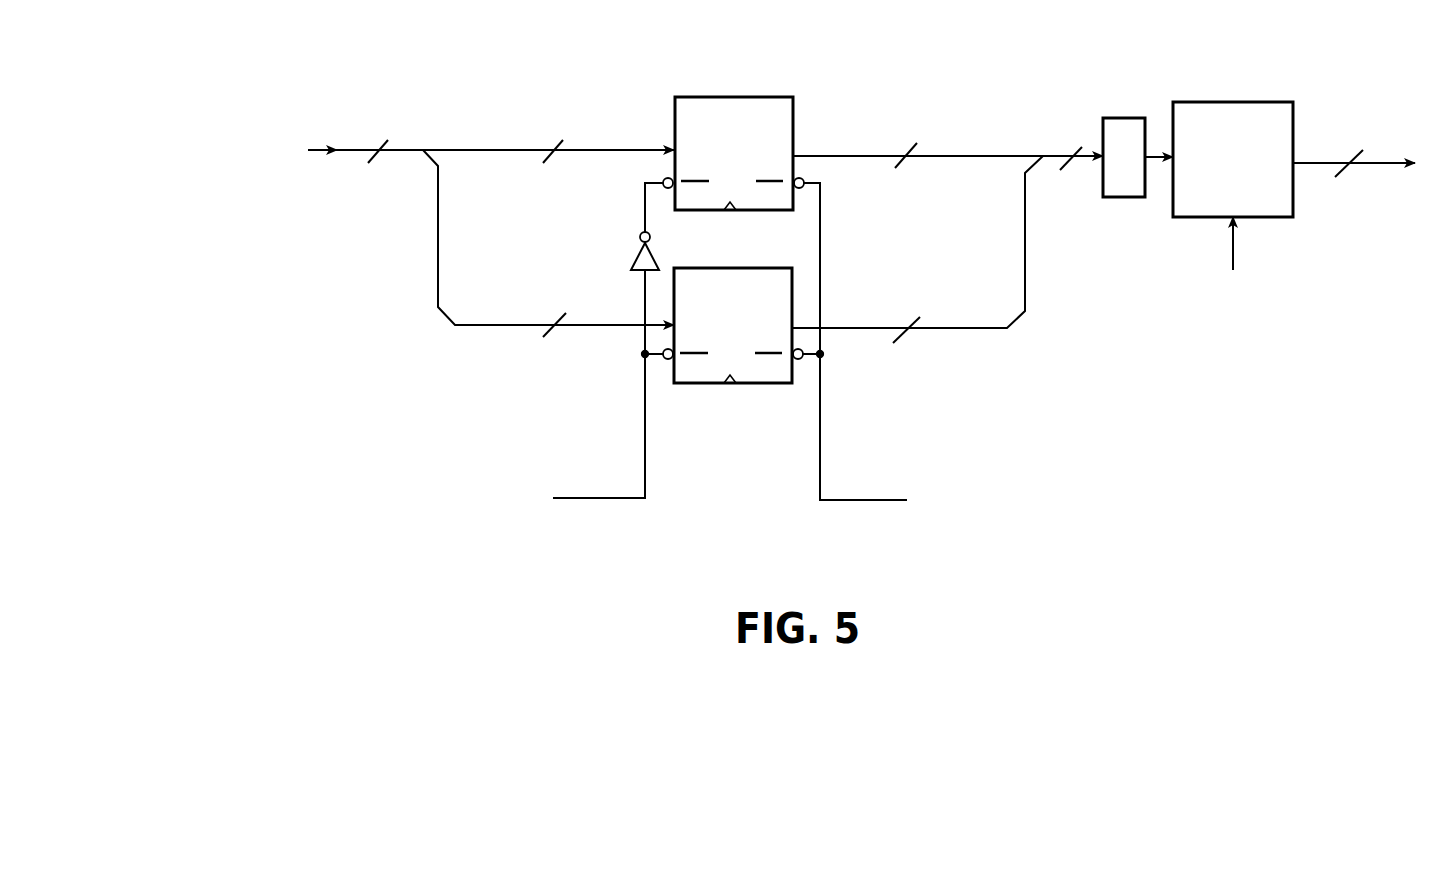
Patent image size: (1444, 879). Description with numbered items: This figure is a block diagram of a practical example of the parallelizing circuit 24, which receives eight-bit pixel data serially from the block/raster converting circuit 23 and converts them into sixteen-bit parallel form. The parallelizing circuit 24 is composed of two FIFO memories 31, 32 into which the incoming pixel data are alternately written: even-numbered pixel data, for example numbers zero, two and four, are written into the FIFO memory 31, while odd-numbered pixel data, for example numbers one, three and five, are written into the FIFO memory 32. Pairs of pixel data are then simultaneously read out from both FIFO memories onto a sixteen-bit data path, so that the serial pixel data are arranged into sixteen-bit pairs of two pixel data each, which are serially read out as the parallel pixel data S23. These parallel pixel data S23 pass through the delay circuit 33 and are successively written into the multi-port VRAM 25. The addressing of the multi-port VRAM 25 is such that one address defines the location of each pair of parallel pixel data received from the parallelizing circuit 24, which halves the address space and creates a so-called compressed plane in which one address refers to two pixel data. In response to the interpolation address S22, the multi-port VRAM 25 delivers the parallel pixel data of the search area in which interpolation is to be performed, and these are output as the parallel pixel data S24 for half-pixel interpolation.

The parallelizing circuit 24 is at (481, 34).
The block/raster converting circuit 23 is at (198, 112).
The FIFO memory 31 is at (713, 97).
The FIFO memory 32 is at (694, 383).
The delay circuit 33 is at (1126, 118).
The multi-port VRAM 25 is at (1232, 102).
The interpolation address S22 is at (1233, 256).
The parallel pixel data S23 is at (1050, 158).
The parallel pixel data S24 is at (1377, 164).